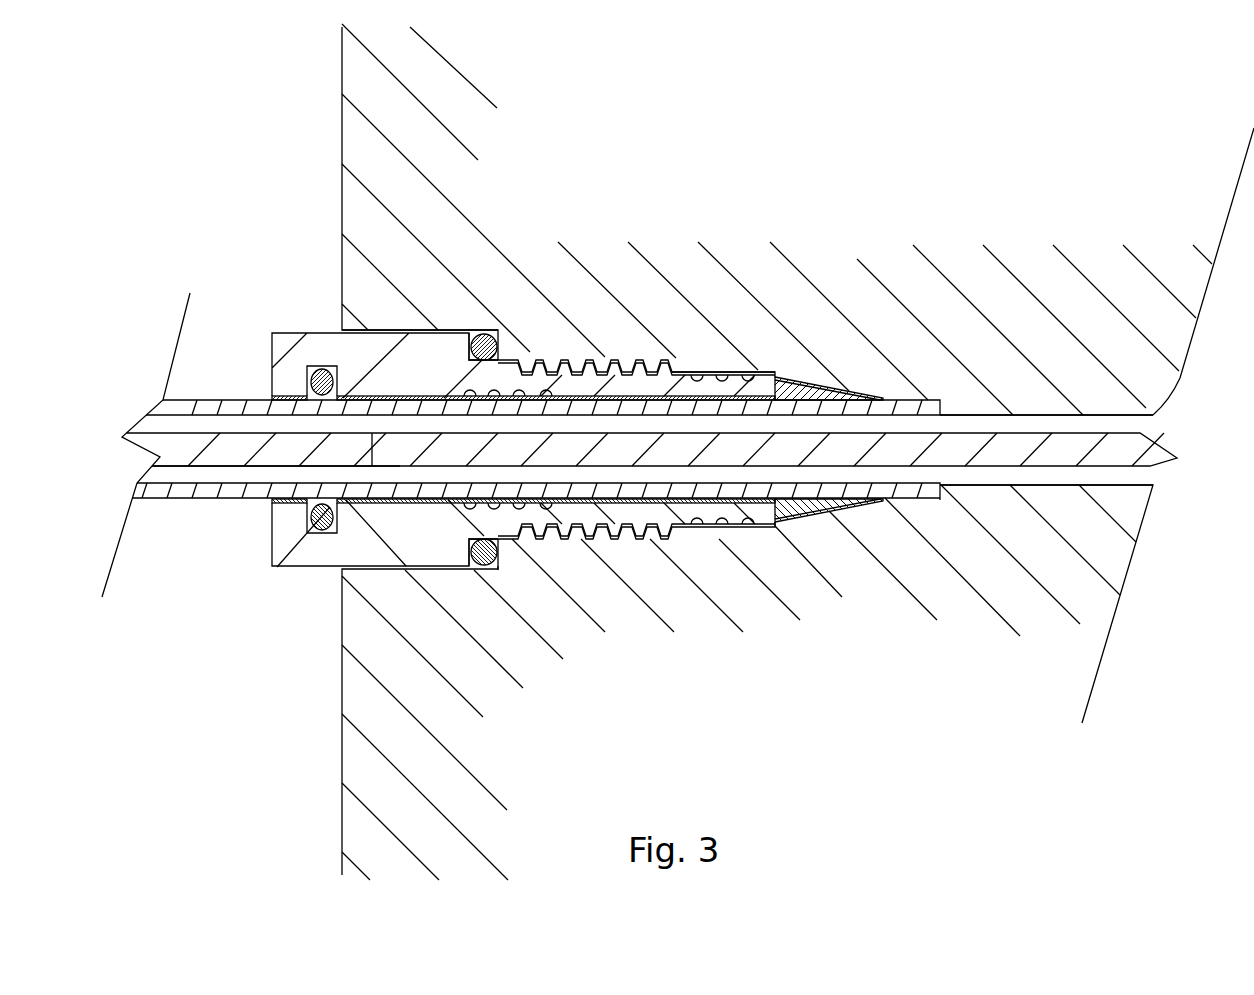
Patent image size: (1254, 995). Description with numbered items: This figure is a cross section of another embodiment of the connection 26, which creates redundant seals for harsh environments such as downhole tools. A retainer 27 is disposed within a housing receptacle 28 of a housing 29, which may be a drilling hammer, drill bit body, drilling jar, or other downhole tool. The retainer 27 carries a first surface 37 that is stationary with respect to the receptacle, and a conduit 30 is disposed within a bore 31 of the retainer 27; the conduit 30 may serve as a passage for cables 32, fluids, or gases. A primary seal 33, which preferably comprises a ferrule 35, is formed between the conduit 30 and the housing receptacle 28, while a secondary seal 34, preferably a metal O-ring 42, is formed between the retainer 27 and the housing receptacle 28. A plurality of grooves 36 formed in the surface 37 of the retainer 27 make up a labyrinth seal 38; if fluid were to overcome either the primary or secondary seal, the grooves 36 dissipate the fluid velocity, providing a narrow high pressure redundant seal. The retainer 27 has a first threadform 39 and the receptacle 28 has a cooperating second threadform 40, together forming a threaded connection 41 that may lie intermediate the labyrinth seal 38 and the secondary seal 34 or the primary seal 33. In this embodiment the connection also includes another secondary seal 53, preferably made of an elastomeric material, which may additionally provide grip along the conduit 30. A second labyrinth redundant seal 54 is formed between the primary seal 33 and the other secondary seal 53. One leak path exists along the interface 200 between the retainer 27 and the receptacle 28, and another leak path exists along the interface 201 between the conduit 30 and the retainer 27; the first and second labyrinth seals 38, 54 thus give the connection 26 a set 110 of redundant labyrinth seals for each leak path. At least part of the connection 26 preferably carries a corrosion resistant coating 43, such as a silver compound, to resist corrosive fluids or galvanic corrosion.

The connection 26 is at (503, 323).
The retainer 27 is at (340, 356).
The housing receptacle 28 is at (885, 397).
The housing 29 is at (788, 315).
The conduit 30 is at (195, 487).
The bore 31 is at (263, 472).
The cables 32 is at (172, 447).
The primary seal 33 is at (832, 515).
The secondary seal 34 is at (505, 580).
The ferrule 35 is at (834, 514).
The grooves 36 is at (778, 548).
The first surface 37 is at (747, 540).
The labyrinth seal 38 is at (701, 535).
The first threadform 39 is at (552, 505).
The second threadform 40 is at (573, 542).
The threaded connection 41 is at (628, 546).
The metal O-ring 42 is at (470, 555).
The corrosion resistant coating 43 is at (305, 393).
The second secondary seal 53 is at (320, 533).
The second labyrinth redundant seal 54 is at (397, 345).
The set of redundant labyrinth seals 110 is at (690, 347).
The interface between retainer and receptacle 200 is at (577, 357).
The interface between conduit and retainer 201 is at (629, 388).